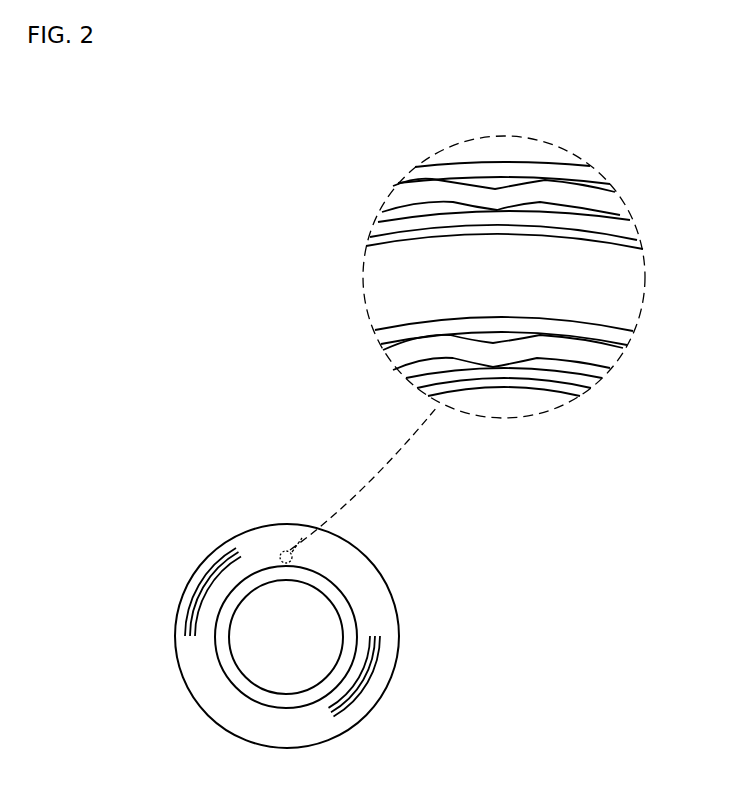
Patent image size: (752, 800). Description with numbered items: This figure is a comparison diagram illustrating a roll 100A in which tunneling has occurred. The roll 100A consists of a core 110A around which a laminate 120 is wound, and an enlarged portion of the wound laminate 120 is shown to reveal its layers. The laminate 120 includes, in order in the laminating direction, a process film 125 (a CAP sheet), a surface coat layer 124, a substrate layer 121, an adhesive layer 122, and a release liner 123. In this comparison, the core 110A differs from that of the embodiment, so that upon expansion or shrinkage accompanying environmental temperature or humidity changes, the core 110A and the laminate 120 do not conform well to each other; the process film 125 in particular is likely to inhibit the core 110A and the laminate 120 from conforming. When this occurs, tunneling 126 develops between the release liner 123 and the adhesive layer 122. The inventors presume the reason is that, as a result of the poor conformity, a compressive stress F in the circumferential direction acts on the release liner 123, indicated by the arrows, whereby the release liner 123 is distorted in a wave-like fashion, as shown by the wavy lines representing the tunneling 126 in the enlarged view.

The roll 100A is at (320, 613).
The core 110A is at (343, 607).
The laminate 120 is at (353, 575).
The substrate layer 121 is at (380, 288).
The adhesive layer 122 is at (552, 173).
The release liner 123 is at (563, 197).
The surface coat layer 124 is at (632, 242).
The process film 125 is at (623, 228).
The tunneling 126 is at (495, 183).
The compressive stress F is at (407, 202).